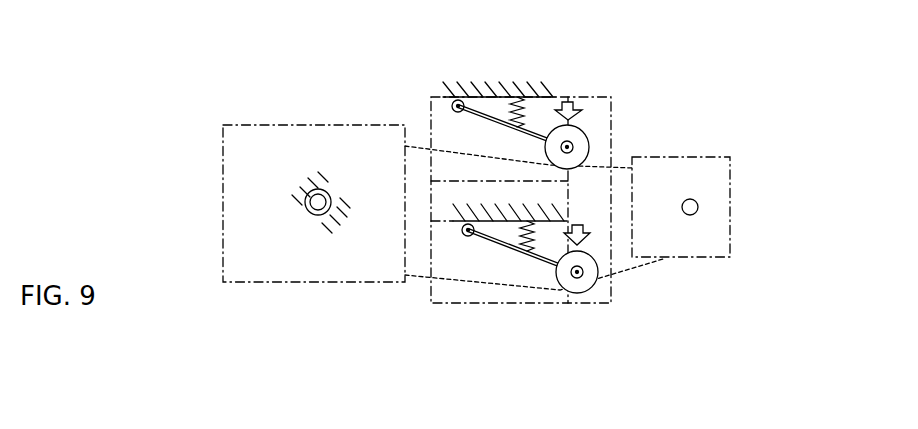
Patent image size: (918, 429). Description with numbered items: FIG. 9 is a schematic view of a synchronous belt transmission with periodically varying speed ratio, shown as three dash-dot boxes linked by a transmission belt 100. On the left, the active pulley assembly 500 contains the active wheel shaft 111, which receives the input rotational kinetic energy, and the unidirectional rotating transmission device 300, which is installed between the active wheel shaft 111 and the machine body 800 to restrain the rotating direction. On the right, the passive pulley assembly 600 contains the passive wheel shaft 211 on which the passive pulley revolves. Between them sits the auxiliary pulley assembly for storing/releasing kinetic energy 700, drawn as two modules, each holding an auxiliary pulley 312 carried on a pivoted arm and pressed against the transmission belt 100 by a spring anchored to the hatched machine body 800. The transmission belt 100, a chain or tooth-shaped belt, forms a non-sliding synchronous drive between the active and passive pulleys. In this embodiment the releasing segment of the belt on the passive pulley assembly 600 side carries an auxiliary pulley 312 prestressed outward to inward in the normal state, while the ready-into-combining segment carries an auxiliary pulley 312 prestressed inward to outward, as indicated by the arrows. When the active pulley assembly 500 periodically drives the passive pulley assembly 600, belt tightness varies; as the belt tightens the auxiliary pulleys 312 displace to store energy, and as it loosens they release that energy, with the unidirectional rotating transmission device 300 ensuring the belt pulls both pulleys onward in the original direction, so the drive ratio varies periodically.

The transmission belt 100 is at (633, 273).
The active wheel shaft 111 is at (320, 193).
The passive wheel shaft 211 is at (690, 214).
The unidirectional rotating transmission device 300 is at (368, 138).
The auxiliary pulley 312 is at (588, 140).
The active pulley assembly 500 is at (306, 125).
The passive pulley assembly 600 is at (707, 213).
The auxiliary pulley assembly for storing/releasing kinetic energy 700 is at (613, 124).
The machine body 800 is at (343, 203).